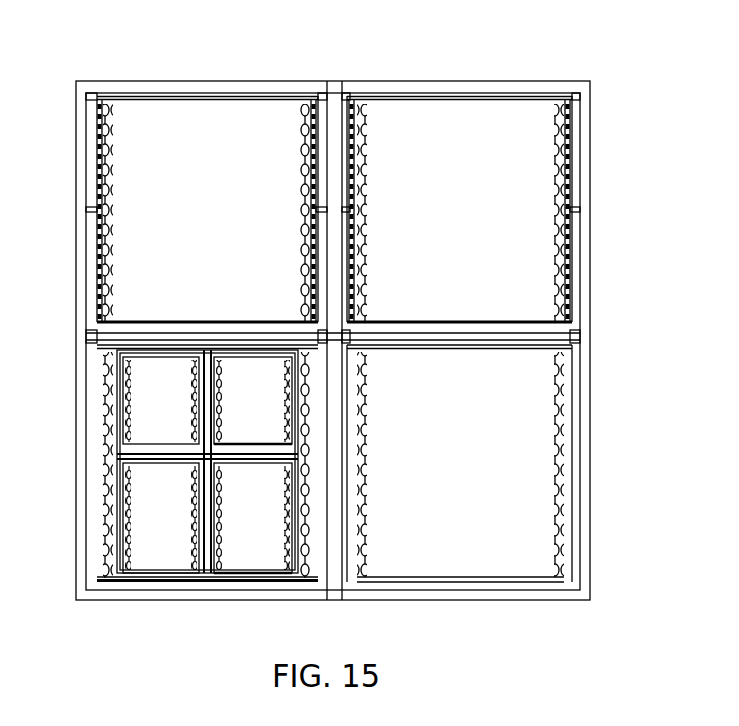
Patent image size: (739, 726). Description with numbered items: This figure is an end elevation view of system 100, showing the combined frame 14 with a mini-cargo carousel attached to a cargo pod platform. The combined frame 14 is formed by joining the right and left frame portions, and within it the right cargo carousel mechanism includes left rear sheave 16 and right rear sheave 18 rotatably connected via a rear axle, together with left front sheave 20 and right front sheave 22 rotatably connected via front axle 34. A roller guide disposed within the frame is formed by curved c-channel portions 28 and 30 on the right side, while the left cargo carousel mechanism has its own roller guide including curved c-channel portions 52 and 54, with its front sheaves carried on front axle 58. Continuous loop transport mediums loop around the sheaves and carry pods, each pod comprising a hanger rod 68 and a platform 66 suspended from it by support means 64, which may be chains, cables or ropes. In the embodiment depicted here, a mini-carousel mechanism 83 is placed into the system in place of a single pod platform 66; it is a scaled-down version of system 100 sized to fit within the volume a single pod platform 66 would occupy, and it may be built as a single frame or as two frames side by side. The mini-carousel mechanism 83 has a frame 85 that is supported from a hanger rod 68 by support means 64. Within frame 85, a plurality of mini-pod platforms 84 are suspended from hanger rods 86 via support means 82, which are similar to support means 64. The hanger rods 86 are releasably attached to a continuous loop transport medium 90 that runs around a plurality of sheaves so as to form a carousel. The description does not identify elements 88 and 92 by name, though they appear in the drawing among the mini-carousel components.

The system 100 is at (165, 40).
The combined frame 14 is at (549, 85).
The left rear sheave 16 is at (100, 283).
The right rear sheave 18 is at (313, 164).
The left front sheave 20 is at (355, 271).
The right front sheave 22 is at (566, 133).
The curved c-channel portion 28 is at (345, 210).
The curved c-channel portion 30 is at (575, 174).
The front axle 34 is at (575, 212).
The curved c-channel portion 52 is at (93, 166).
The curved c-channel portion 54 is at (313, 246).
The front axle 58 is at (96, 208).
The support means 64 is at (367, 133).
The platform 66 is at (236, 326).
The hanger rod 68 is at (262, 100).
The support means 82 is at (285, 418).
The mini-carousel mechanism 83 is at (120, 536).
The mini-pod platform 84 is at (273, 446).
The frame 85 is at (112, 580).
The hanger rod 86 is at (268, 357).
The sub-panel chain 88 is at (195, 365).
The continuous loop transport medium 90 is at (197, 410).
The sub-panel divider 92 is at (212, 455).